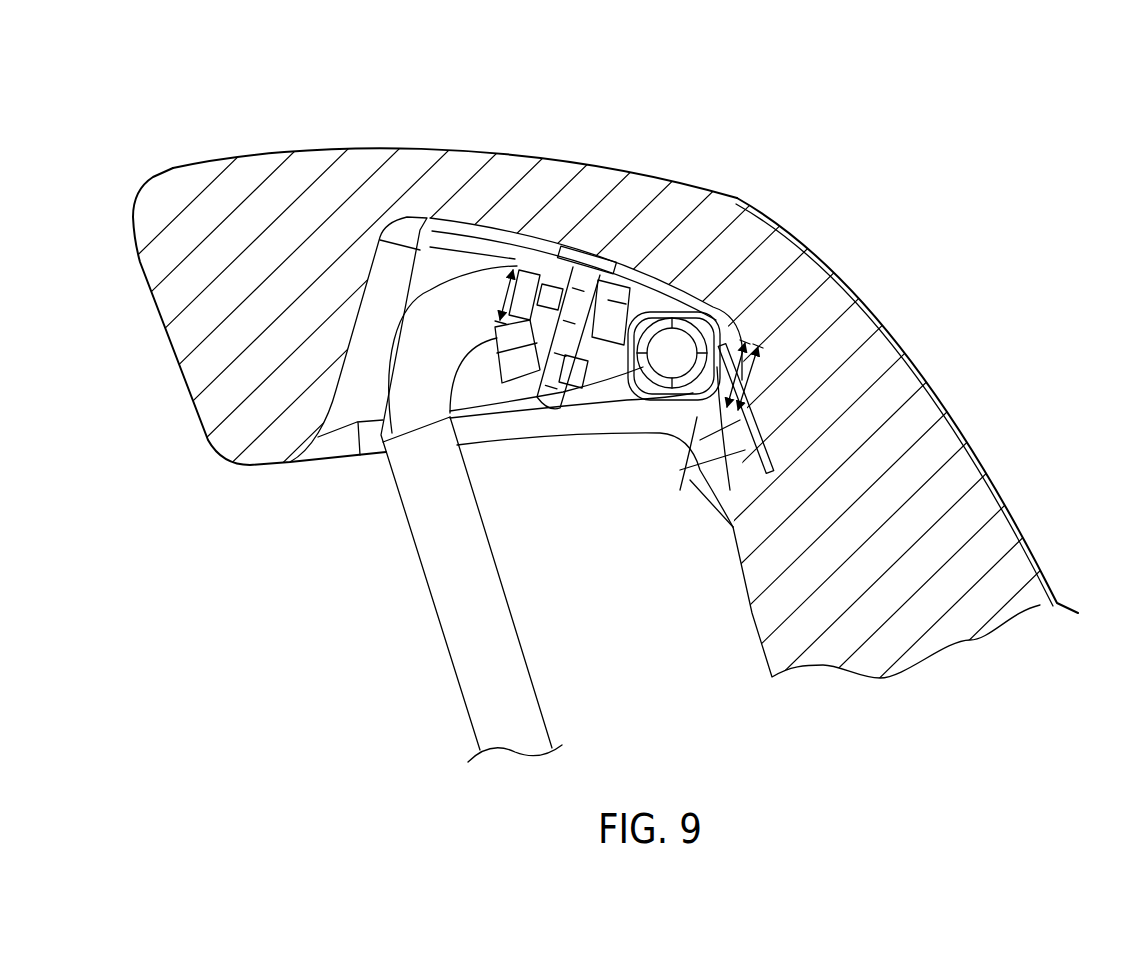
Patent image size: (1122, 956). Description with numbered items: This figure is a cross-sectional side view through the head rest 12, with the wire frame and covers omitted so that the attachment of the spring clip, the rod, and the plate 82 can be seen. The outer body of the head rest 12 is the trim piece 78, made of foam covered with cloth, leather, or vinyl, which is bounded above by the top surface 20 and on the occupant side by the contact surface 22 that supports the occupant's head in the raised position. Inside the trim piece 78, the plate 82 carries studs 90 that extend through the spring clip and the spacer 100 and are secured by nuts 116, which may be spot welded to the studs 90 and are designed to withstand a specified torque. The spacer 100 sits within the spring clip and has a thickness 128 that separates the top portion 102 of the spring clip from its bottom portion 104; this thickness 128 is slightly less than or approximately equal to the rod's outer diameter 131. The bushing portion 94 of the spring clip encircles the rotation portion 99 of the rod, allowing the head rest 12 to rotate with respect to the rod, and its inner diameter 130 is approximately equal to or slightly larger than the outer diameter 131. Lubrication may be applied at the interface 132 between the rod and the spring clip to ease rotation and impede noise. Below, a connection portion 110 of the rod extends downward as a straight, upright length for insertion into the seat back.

The head rest 12 is at (649, 150).
The top surface 20 is at (375, 148).
The contact surface 22 is at (1020, 530).
The trim piece 78 is at (840, 285).
The plate 82 is at (690, 298).
The studs 90 is at (590, 253).
The bushing portion 94 is at (722, 332).
The rotation portion 99 is at (665, 380).
The spacer 100 is at (528, 326).
The top portion 102 is at (633, 302).
The bottom portion 104 is at (608, 402).
The connection portions 110 is at (428, 598).
The nuts 116 is at (540, 378).
The thickness 128 is at (508, 292).
The inner diameter 130 is at (680, 455).
The outer diameter 131 is at (760, 383).
The interface 132 is at (742, 337).